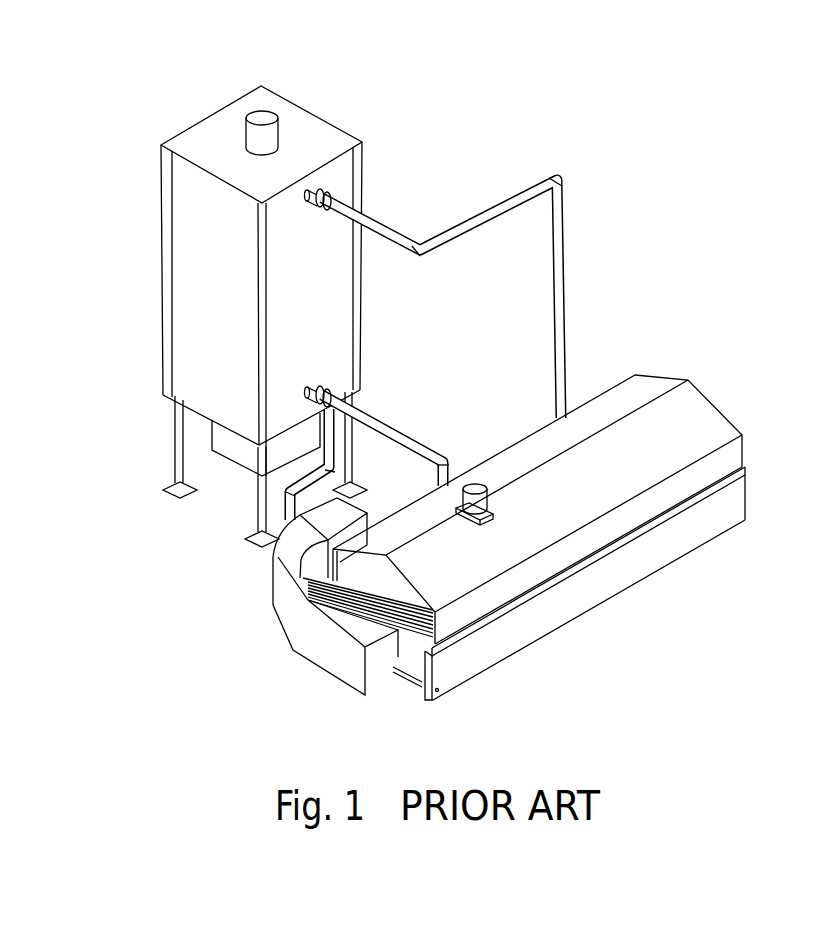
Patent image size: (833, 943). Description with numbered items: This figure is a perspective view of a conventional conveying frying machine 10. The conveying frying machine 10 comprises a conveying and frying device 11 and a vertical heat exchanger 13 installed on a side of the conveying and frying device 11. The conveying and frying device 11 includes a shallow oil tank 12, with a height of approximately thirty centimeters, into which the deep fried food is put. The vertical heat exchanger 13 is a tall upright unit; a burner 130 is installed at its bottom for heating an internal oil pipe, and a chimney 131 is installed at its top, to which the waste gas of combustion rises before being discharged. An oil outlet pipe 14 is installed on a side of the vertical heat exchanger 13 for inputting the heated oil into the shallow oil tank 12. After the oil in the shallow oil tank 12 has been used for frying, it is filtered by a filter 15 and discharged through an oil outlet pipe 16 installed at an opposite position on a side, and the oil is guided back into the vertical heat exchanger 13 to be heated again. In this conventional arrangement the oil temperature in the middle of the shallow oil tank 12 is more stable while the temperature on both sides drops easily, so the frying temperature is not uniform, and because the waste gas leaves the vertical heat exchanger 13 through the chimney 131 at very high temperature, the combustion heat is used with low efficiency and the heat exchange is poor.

The conveying frying machine 10 is at (633, 254).
The conveying and frying device 11 is at (727, 412).
The shallow oil tank 12 is at (418, 610).
The vertical heat exchanger 13 is at (187, 250).
The burner 130 is at (242, 452).
The chimney 131 is at (268, 135).
The oil outlet pipe 14 is at (484, 217).
The filter 15 is at (353, 512).
The oil outlet pipe 16 is at (392, 422).